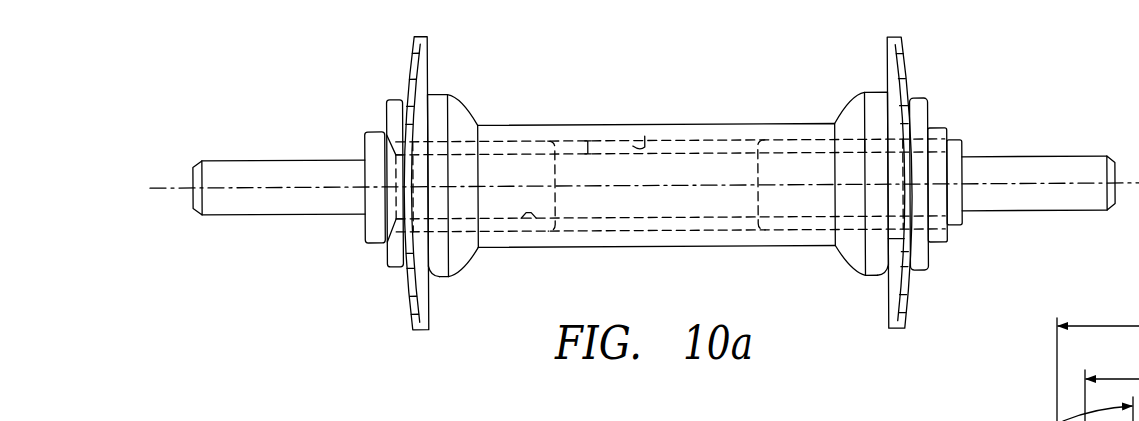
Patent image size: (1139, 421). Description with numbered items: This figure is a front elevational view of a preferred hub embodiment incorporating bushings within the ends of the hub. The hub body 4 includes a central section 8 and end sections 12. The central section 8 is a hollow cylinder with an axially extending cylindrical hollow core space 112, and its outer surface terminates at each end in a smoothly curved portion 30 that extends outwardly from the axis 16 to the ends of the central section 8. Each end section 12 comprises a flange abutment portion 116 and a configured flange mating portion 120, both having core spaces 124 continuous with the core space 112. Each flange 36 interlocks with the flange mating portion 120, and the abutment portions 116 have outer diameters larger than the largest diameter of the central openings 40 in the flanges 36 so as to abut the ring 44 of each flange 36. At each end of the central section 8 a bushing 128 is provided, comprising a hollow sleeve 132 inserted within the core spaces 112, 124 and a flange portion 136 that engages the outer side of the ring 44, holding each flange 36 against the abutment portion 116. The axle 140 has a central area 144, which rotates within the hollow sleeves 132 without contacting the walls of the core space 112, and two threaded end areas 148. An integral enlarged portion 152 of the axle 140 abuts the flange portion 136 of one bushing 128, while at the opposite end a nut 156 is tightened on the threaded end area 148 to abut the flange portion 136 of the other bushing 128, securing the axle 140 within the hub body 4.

The hub body 4 is at (699, 122).
The central section 8 is at (748, 132).
The end sections 12 is at (437, 98).
The axis 16 is at (1053, 186).
The smoothly curved portion 30 is at (463, 118).
The flanges 36 is at (426, 334).
The central openings 40 is at (928, 130).
The ring 44 is at (912, 84).
The hollow core space 112 is at (645, 136).
The flange abutment portions 116 is at (437, 272).
The flange mating portions 120 is at (905, 245).
The core spaces 124 is at (850, 226).
The bushing 128 is at (506, 234).
The hollow sleeve 132 is at (537, 228).
The flange portions 136 is at (395, 267).
The axle 140 is at (325, 169).
The central area 144 is at (590, 134).
The threaded end areas 148 is at (278, 168).
The enlarged portion 152 is at (375, 239).
The nut 156 is at (960, 150).